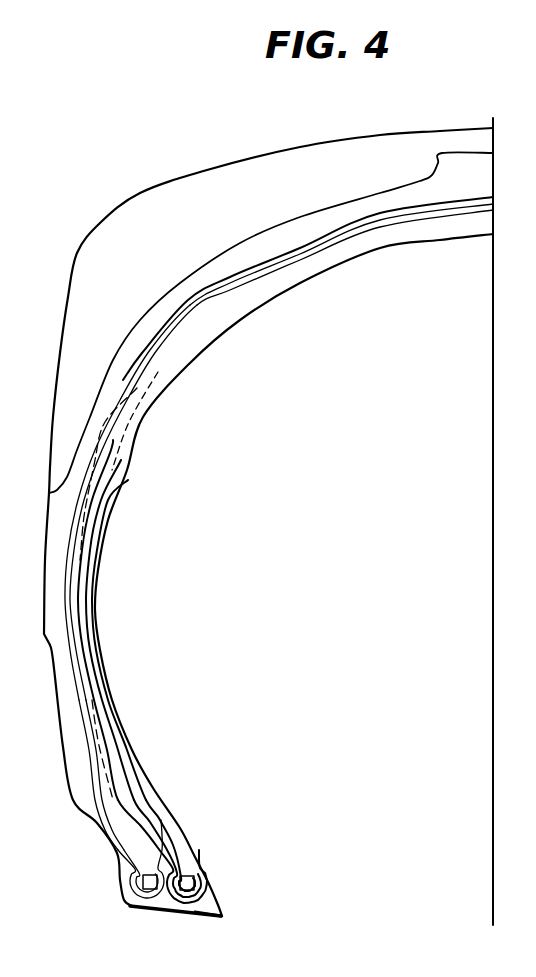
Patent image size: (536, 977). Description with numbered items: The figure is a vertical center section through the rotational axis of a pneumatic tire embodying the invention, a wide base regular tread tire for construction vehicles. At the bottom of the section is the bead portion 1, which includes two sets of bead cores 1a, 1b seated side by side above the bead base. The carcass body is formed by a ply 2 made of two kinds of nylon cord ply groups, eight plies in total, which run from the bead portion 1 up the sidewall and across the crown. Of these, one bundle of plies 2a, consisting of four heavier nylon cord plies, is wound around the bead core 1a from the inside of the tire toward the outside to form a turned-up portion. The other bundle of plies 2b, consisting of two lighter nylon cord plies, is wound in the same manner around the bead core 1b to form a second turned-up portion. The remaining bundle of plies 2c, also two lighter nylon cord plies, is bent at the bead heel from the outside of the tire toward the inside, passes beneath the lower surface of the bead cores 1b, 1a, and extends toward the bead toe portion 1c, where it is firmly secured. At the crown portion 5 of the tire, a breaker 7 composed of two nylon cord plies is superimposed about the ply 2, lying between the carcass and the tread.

The bead portion 1 is at (128, 905).
The bead core 1a is at (187, 913).
The bead core 1b is at (148, 910).
The bead toe portion 1c is at (207, 901).
The ply 2 is at (86, 555).
The bundle of plies 2a is at (162, 822).
The bundle of plies 2b is at (143, 858).
The bundle of plies 2c is at (98, 800).
The crown portion 5 is at (311, 218).
The breaker 7 is at (258, 262).